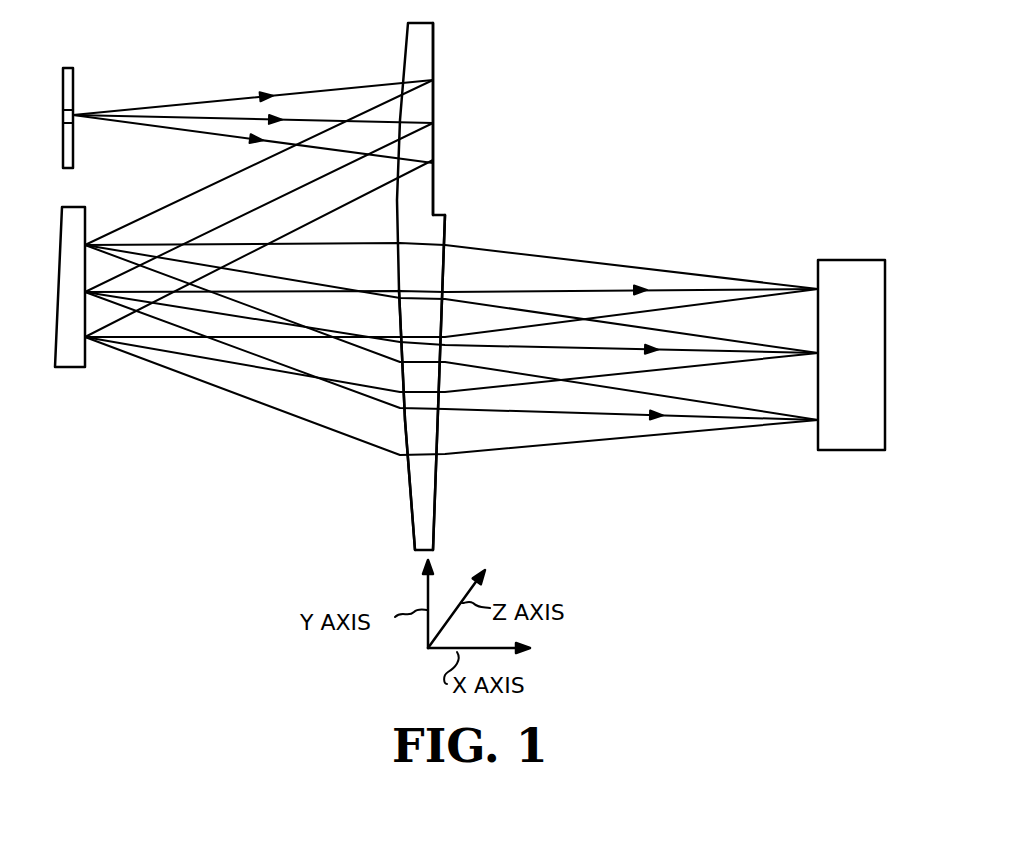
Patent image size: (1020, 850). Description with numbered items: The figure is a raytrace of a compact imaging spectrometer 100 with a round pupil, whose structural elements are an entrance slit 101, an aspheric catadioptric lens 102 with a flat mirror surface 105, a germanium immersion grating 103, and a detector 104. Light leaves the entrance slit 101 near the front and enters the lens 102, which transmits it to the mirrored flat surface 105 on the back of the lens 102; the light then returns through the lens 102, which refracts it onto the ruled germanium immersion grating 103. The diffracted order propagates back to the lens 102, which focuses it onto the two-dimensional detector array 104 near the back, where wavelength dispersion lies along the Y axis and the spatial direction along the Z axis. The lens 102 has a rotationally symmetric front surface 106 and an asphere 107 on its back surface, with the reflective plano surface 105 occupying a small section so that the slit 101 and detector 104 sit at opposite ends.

The compact imaging spectrometer 100 is at (552, 152).
The entrance slit 101 is at (73, 95).
The aspheric catadioptric lens 102 is at (423, 498).
The germanium immersion grating 103 is at (70, 370).
The detector 104 is at (838, 259).
The flat mirror surface 105 is at (437, 105).
The front surface 106 is at (405, 473).
The asphere 107 is at (445, 471).